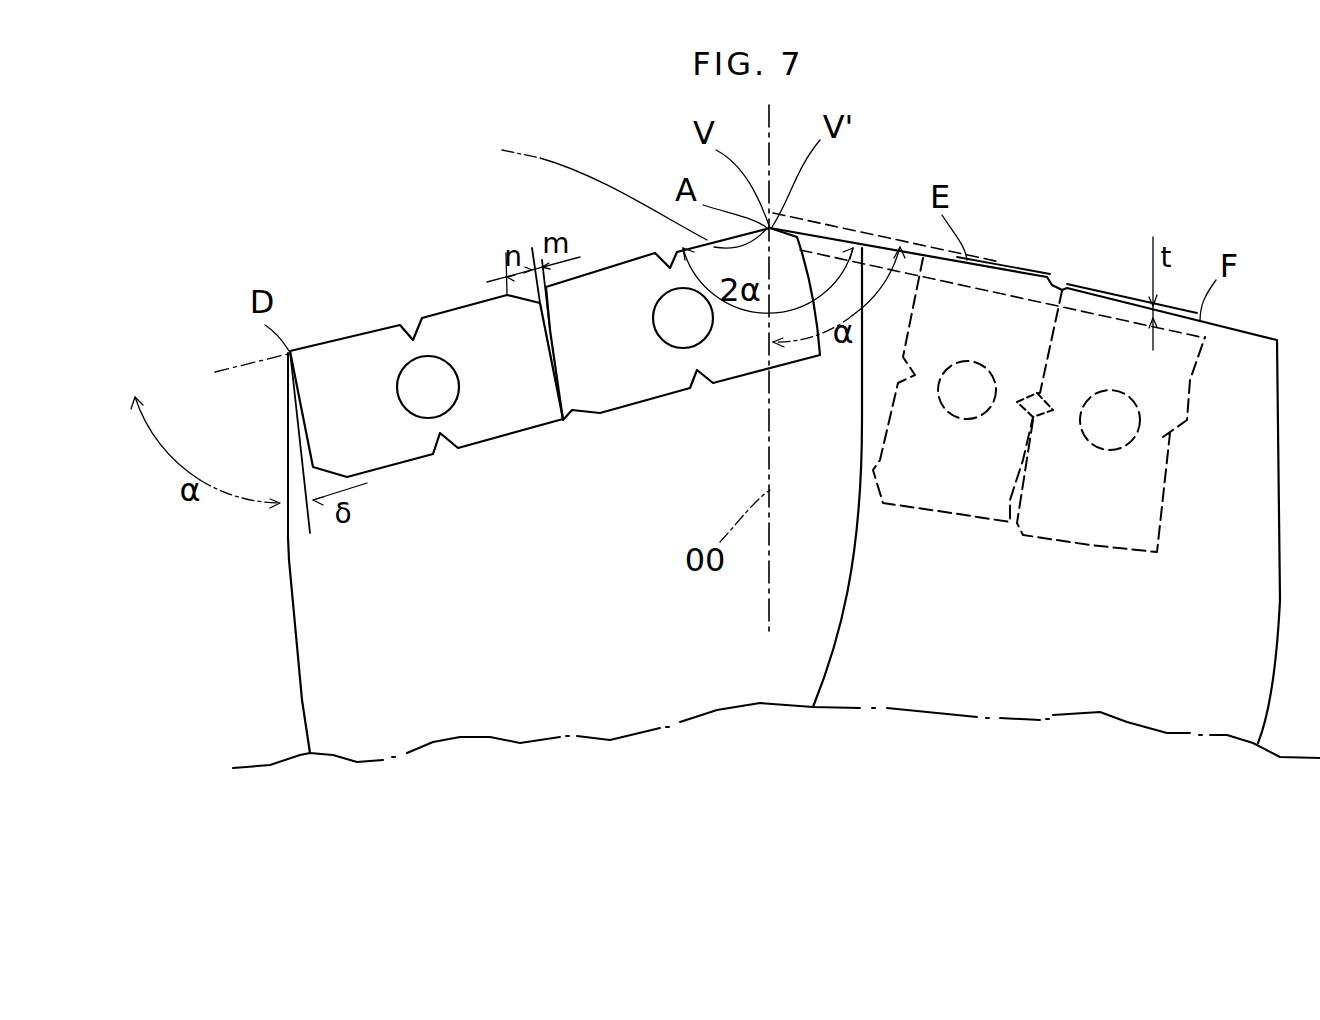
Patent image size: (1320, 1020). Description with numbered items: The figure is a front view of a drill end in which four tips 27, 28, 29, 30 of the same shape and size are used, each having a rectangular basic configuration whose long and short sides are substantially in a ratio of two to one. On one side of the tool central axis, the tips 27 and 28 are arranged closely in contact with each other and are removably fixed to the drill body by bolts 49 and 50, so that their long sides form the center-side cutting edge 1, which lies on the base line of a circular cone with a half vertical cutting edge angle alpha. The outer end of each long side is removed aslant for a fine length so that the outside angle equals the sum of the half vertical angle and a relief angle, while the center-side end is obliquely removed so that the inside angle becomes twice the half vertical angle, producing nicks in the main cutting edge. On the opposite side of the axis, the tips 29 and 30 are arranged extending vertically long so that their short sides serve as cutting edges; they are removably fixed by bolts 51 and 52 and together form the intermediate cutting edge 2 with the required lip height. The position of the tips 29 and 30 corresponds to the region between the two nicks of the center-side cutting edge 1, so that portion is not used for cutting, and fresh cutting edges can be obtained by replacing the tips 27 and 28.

The center-side cutting edge 1 is at (363, 333).
The intermediate cutting edge 2 is at (1013, 267).
The tip 27 is at (500, 440).
The tip 28 is at (660, 398).
The tip 29 is at (928, 512).
The tip 30 is at (1067, 545).
The bolt 49 is at (457, 383).
The bolt 50 is at (657, 330).
The bolt 51 is at (947, 413).
The bolt 52 is at (1128, 447).